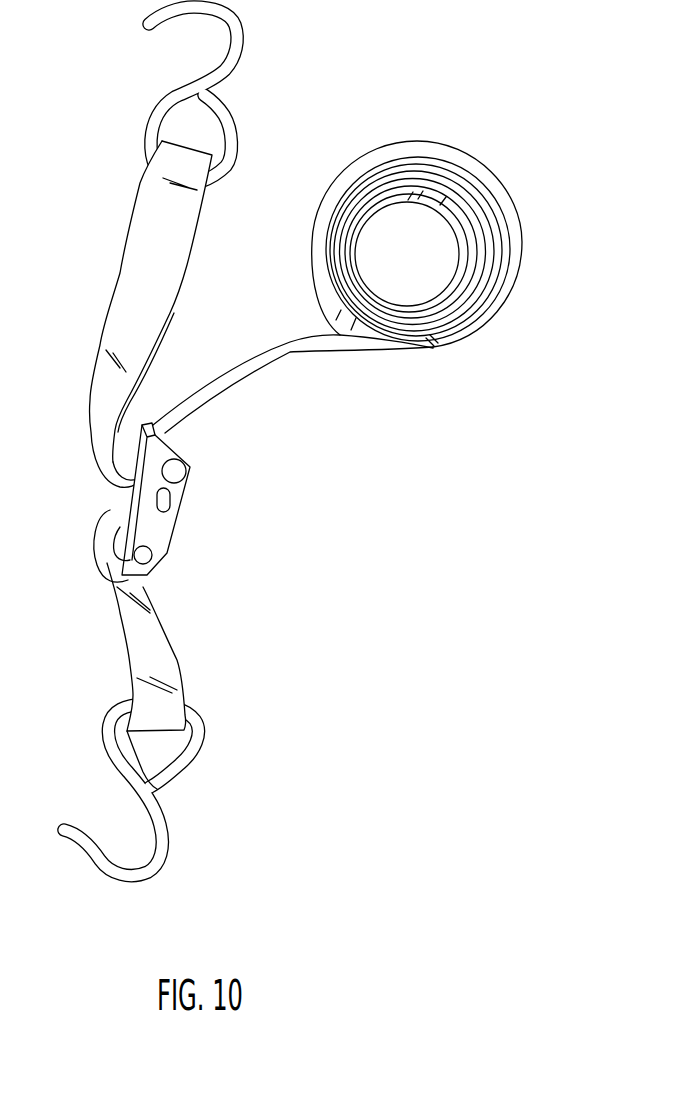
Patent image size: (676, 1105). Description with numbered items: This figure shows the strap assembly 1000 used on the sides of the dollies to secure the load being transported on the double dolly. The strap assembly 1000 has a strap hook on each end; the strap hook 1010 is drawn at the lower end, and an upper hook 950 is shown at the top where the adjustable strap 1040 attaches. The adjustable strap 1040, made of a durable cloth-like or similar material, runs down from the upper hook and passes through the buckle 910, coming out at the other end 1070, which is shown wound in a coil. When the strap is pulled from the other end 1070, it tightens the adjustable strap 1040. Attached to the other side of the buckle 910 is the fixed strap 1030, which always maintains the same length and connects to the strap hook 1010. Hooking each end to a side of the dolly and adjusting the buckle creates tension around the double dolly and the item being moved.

The hook 950 is at (164, 98).
The adjustable strap 1040 is at (128, 282).
The other end 1070 is at (440, 342).
The buckle 910 is at (154, 520).
The fixed strap 1030 is at (128, 652).
The strap assembly 1000 is at (210, 807).
The strap hook 1010 is at (133, 833).